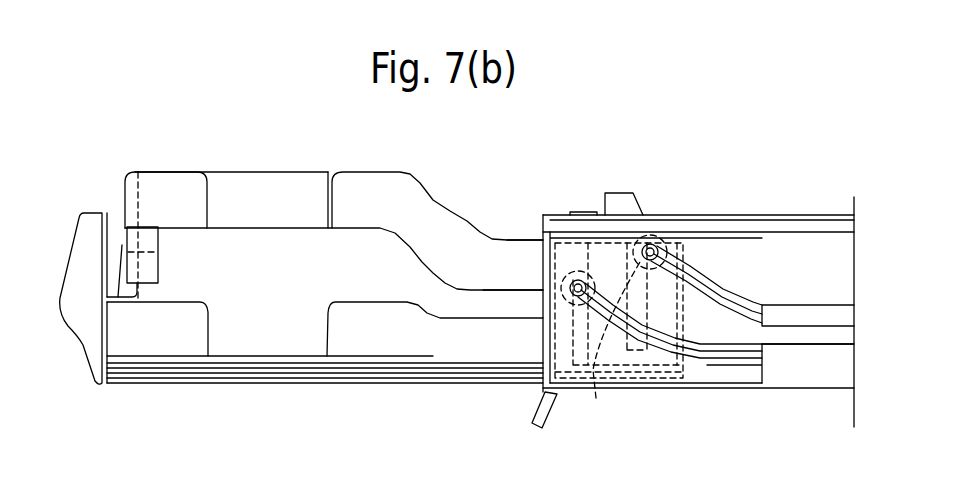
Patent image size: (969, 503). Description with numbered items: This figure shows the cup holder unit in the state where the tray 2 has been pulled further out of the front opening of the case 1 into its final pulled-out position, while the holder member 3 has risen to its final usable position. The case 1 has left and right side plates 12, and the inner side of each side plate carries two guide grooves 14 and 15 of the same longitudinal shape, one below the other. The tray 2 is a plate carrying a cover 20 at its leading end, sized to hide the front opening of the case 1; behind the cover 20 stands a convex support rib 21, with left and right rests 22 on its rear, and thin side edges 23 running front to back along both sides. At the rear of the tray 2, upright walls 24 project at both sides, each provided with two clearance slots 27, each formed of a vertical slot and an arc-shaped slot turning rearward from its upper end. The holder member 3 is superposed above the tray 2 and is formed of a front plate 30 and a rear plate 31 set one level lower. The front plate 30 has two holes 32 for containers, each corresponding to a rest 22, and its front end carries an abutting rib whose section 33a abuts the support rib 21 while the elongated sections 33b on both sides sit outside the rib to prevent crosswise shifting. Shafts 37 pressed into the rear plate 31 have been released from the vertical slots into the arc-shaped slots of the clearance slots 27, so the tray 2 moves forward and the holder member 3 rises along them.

The case 1 is at (772, 205).
The tray 2 is at (80, 352).
The cover 20 is at (88, 344).
The holder member 3 is at (443, 193).
The side plate 12 is at (822, 380).
The guide groove 14 is at (707, 361).
The guide groove 15 is at (736, 313).
The support rib 21 is at (122, 245).
The rest 22 is at (327, 339).
The side edge 23 is at (407, 380).
The upright wall 24 is at (556, 212).
The clearance slot 27 is at (596, 398).
The front plate 30 is at (180, 180).
The rear plate 31 is at (520, 247).
The hole 32 is at (330, 193).
The section of abutting rib 33a is at (137, 172).
The section of abutting rib 33b is at (150, 270).
The shaft 37 is at (581, 285).